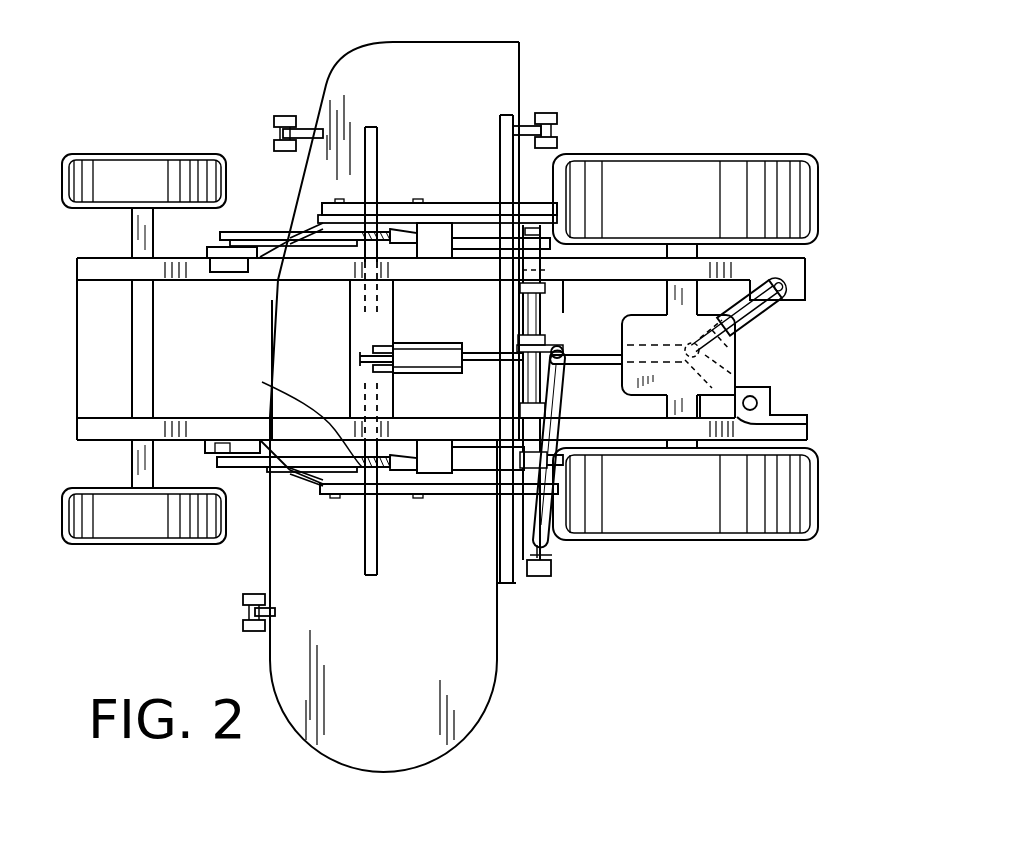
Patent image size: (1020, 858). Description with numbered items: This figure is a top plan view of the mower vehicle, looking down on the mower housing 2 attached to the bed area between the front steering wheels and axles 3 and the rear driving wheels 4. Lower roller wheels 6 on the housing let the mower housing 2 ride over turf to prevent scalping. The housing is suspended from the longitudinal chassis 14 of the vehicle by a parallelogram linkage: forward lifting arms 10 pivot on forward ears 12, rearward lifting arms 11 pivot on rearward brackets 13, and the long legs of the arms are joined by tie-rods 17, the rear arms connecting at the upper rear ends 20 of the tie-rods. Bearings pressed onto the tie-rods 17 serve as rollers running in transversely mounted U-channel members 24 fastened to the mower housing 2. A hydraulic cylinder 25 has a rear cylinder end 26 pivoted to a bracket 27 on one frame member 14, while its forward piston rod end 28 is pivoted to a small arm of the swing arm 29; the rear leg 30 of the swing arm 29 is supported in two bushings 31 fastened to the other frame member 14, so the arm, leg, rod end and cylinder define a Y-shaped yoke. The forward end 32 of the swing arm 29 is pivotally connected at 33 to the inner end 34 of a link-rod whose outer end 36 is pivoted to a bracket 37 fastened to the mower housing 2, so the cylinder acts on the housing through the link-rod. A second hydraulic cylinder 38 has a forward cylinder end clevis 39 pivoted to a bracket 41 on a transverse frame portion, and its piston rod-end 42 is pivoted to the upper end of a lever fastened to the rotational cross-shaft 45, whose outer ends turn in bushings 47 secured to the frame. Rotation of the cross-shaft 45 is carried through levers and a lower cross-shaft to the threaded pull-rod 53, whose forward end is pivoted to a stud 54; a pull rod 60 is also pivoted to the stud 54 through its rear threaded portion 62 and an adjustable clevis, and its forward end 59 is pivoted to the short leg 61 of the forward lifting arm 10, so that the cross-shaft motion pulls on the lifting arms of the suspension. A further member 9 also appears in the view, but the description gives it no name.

The mower housing 2 is at (398, 705).
The front steering wheels and axles 3 is at (72, 168).
The rear driving wheels 4 is at (820, 190).
The lower roller wheels 6 is at (277, 117).
The support bar 9 is at (468, 238).
The forward lifting arms 10 is at (310, 224).
The rearward lifting arms 11 is at (481, 215).
The forward ears 12 is at (218, 280).
The rearward brackets 13 is at (433, 225).
The longitudinal chassis 14 is at (633, 268).
The tie-rods 17 is at (392, 205).
The upper rear ends of tie-rods 20 is at (541, 270).
The U-channel members 24 is at (367, 128).
The hydraulic cylinder 25 is at (760, 327).
The rear cylinder end 26 is at (788, 297).
The bracket 27 is at (807, 268).
The forward piston rod end 28 is at (742, 356).
The swing arm 29 is at (620, 350).
The rear leg of swing arm 30 is at (762, 398).
The bushings 31 is at (805, 430).
The forward end of swing arm 32 is at (583, 354).
The pivotal connection 33 is at (585, 364).
The inner end of link-rod 34 is at (563, 360).
The outer end of link-rod 36 is at (556, 540).
The bracket 37 is at (547, 555).
The hydraulic cylinder 38 is at (431, 343).
The forward cylinder end clevis 39 is at (403, 331).
The bracket 41 is at (373, 350).
The piston rod-end 42 is at (510, 357).
The rotational cross-shaft 45 is at (545, 285).
The bushings 47 is at (540, 313).
The threaded pull-rod 53 is at (473, 452).
The stud 54 is at (418, 202).
The forward end of pull rod 59 is at (203, 232).
The pull rod 60 is at (262, 240).
The short leg of forward lifting arm 61 is at (213, 247).
The rear threaded portion of pull-rod 62 is at (345, 243).